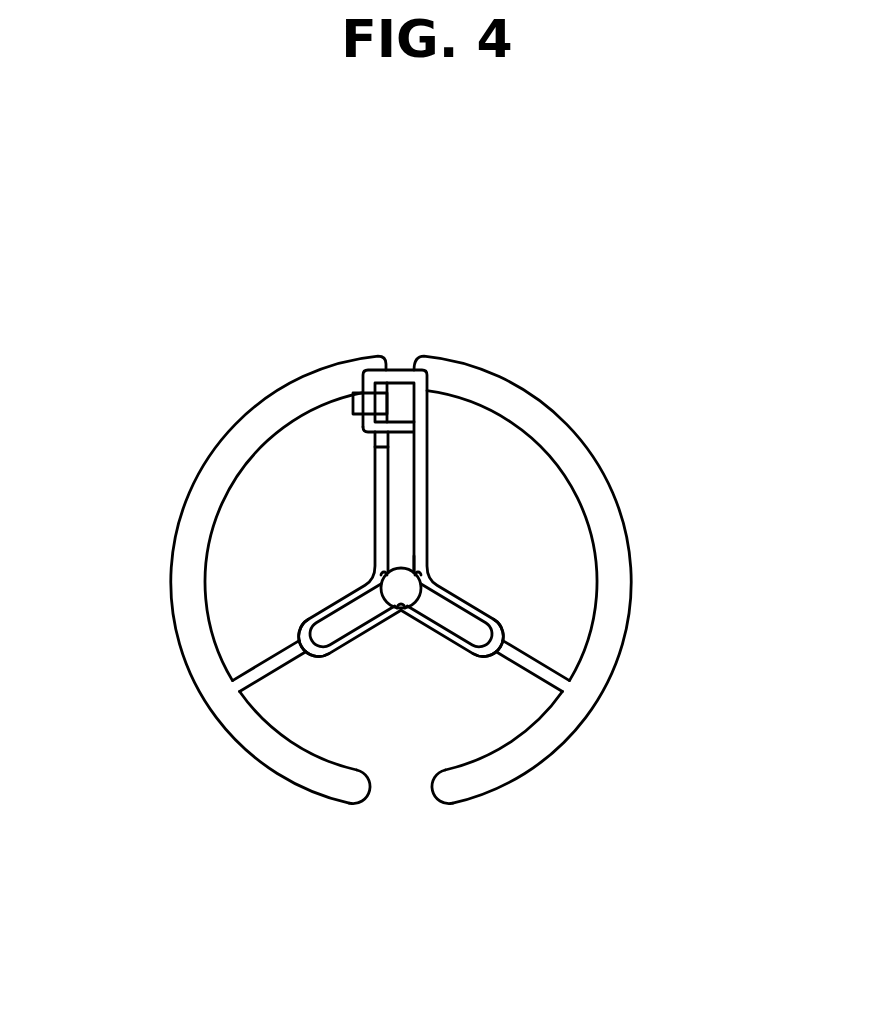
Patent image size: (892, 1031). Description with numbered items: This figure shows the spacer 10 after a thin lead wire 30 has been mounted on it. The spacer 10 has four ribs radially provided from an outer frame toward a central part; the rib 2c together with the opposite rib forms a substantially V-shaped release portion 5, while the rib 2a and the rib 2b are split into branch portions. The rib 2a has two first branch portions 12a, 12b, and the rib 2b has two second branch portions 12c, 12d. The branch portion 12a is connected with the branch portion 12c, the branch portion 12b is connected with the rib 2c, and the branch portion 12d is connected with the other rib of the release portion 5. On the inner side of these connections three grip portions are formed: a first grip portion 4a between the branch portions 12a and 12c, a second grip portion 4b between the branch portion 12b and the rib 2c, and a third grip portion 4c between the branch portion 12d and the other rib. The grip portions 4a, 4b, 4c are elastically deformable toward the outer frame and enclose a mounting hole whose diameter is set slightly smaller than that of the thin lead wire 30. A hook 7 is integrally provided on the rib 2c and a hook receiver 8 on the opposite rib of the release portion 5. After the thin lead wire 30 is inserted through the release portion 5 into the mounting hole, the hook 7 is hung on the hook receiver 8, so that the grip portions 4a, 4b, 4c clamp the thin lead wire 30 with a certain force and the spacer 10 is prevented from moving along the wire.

The spacer 10 is at (483, 357).
The hook receiver 8 is at (399, 375).
The hook 7 is at (353, 401).
The release portion 5 is at (400, 472).
The rib 2c is at (378, 502).
The thin lead wire 30 is at (416, 575).
The grip portion 4a is at (402, 612).
The grip portion 4b is at (381, 577).
The grip portion 4c is at (421, 588).
The branch portion 12b is at (327, 607).
The branch portion 12a is at (353, 640).
The branch portion 12d is at (476, 610).
The branch portion 12c is at (450, 640).
The rib 2a is at (307, 670).
The rib 2b is at (522, 670).